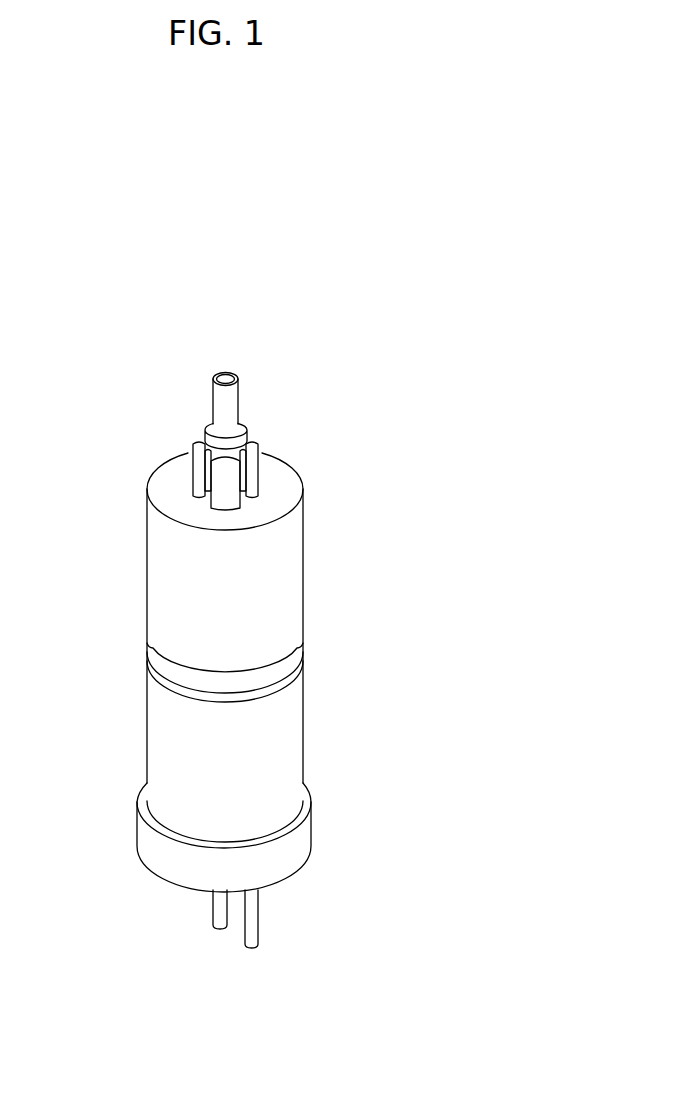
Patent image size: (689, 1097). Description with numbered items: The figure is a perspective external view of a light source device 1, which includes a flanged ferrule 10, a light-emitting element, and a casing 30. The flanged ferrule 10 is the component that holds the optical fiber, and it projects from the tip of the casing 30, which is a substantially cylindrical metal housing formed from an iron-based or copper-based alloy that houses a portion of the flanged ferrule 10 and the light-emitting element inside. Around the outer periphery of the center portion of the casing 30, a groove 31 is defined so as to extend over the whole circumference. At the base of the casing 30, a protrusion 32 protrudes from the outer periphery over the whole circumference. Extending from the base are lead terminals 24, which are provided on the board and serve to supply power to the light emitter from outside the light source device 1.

The light source device 1 is at (307, 393).
The flanged ferrule 10 is at (220, 417).
The lead terminal 24 is at (217, 910).
The casing 30 is at (138, 592).
The groove 31 is at (175, 670).
The protrusion 32 is at (153, 848).